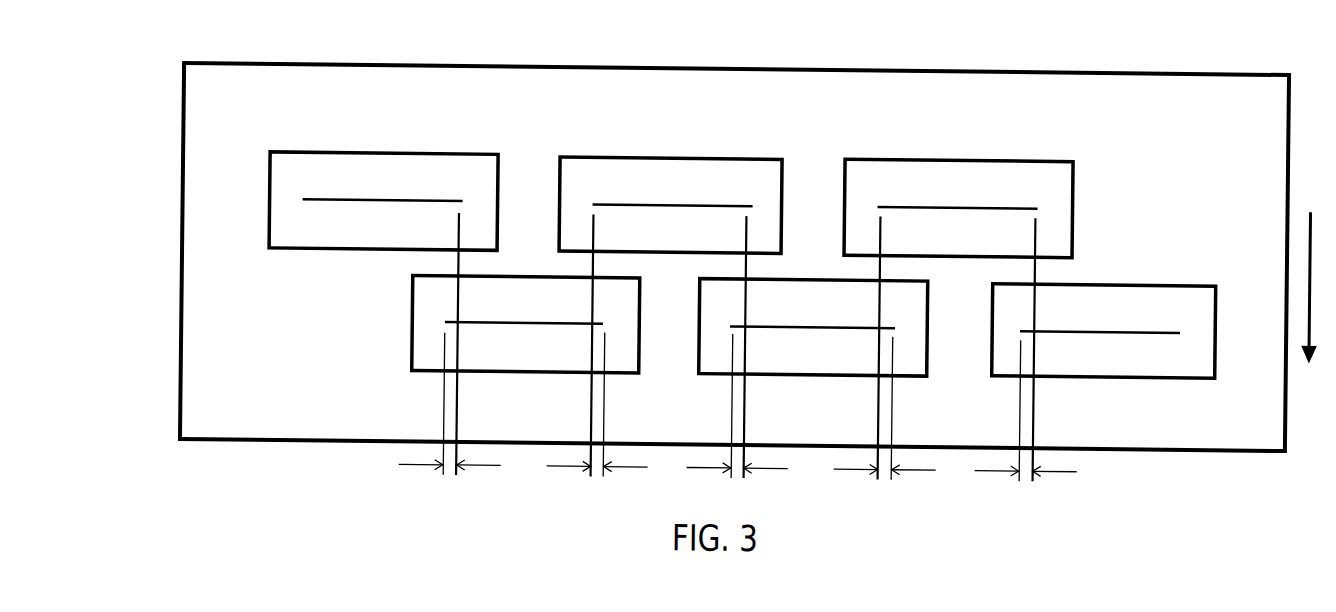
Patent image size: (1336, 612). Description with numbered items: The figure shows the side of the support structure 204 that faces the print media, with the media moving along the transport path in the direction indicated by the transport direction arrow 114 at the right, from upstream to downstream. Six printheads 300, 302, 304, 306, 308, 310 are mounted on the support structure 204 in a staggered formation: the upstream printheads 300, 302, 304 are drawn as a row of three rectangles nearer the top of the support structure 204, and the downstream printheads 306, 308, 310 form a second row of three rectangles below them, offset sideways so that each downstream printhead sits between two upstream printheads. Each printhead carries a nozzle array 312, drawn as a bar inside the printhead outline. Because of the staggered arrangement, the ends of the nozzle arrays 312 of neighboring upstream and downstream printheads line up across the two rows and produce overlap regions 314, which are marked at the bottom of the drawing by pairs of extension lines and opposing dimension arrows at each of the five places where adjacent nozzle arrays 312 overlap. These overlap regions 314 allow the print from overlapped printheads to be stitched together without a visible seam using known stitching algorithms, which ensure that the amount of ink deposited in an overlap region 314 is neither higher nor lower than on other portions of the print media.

The transport direction arrow 114 is at (1312, 270).
The support structure 204 is at (1260, 449).
The printhead 300 is at (382, 156).
The printhead 302 is at (679, 158).
The printhead 304 is at (969, 157).
The printhead 306 is at (538, 374).
The printhead 308 is at (836, 372).
The printhead 310 is at (1151, 372).
The nozzle array 312 is at (311, 205).
The overlap region 314 is at (582, 470).